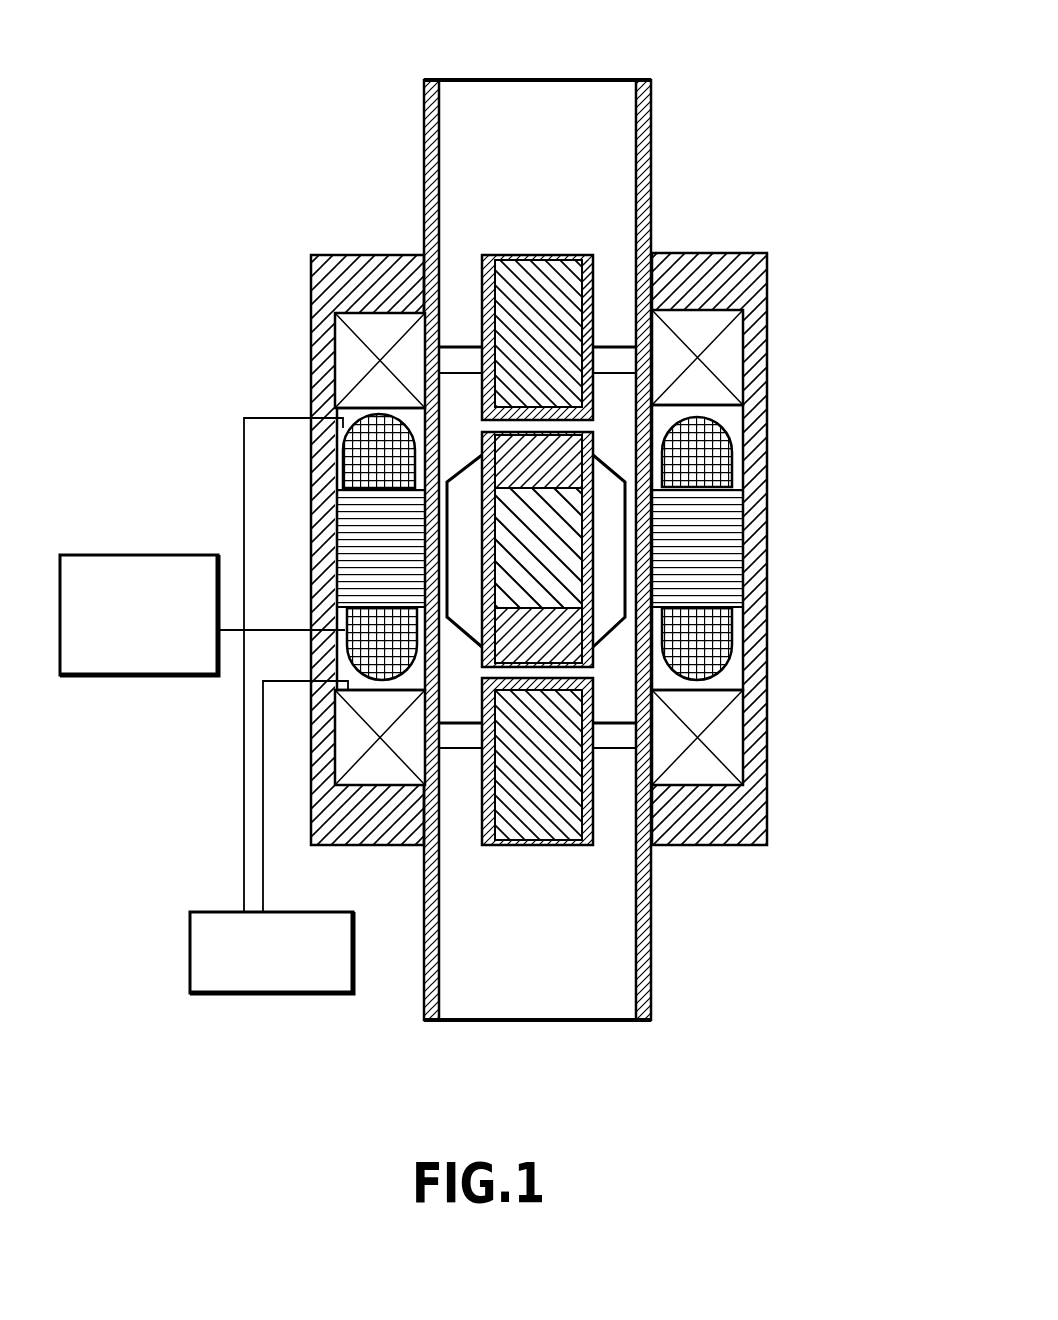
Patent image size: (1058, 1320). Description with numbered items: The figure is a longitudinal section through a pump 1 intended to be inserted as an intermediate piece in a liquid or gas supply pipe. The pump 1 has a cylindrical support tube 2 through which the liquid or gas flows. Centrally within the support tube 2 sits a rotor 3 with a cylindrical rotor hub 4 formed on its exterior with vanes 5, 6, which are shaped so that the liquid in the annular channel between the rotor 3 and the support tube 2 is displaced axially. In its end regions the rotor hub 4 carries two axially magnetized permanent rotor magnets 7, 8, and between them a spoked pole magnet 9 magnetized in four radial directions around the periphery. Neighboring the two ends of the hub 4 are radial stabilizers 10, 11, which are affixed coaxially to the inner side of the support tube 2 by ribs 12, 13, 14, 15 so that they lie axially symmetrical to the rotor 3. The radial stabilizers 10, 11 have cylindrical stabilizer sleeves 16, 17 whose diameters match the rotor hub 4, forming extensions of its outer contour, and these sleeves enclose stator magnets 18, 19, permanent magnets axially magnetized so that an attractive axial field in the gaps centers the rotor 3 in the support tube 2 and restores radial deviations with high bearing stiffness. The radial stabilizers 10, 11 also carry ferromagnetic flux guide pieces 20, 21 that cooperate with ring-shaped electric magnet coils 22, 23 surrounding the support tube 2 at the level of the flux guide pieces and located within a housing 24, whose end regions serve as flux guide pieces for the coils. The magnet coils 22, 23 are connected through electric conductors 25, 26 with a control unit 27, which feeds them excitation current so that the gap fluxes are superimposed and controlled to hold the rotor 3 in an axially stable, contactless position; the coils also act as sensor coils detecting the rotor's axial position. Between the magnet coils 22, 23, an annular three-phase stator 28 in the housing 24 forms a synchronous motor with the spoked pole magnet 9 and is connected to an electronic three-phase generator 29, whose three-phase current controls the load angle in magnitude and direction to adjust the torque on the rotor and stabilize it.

The pump 1 is at (661, 510).
The cylindrical support tube 2 is at (652, 85).
The rotor 3 is at (605, 437).
The cylindrical rotor hub 4 is at (600, 655).
The vane 5 is at (460, 529).
The vane 6 is at (534, 580).
The rotor magnet 7 is at (628, 440).
The rotor magnet 8 is at (655, 603).
The spoked pole magnet 9 is at (616, 545).
The radial stabilizer 10 is at (750, 253).
The radial stabilizer 11 is at (606, 831).
The rib 12 is at (456, 360).
The rib 13 is at (612, 286).
The rib 14 is at (412, 818).
The rib 15 is at (687, 848).
The stabilizer sleeve 16 is at (592, 255).
The stabilizer sleeve 17 is at (593, 847).
The stator magnet 18 is at (593, 703).
The stator magnet 19 is at (613, 358).
The ferromagnetic flux guide piece 20 is at (533, 287).
The ferromagnetic flux guide piece 21 is at (482, 840).
The magnet coil 22 is at (370, 335).
The magnet coil 23 is at (352, 745).
The housing 24 is at (322, 347).
The electric conductor 25 is at (244, 510).
The electric conductor 26 is at (252, 873).
The control unit 27 is at (190, 970).
The three-phase stator 28 is at (332, 460).
The three-phase generator 29 is at (163, 665).